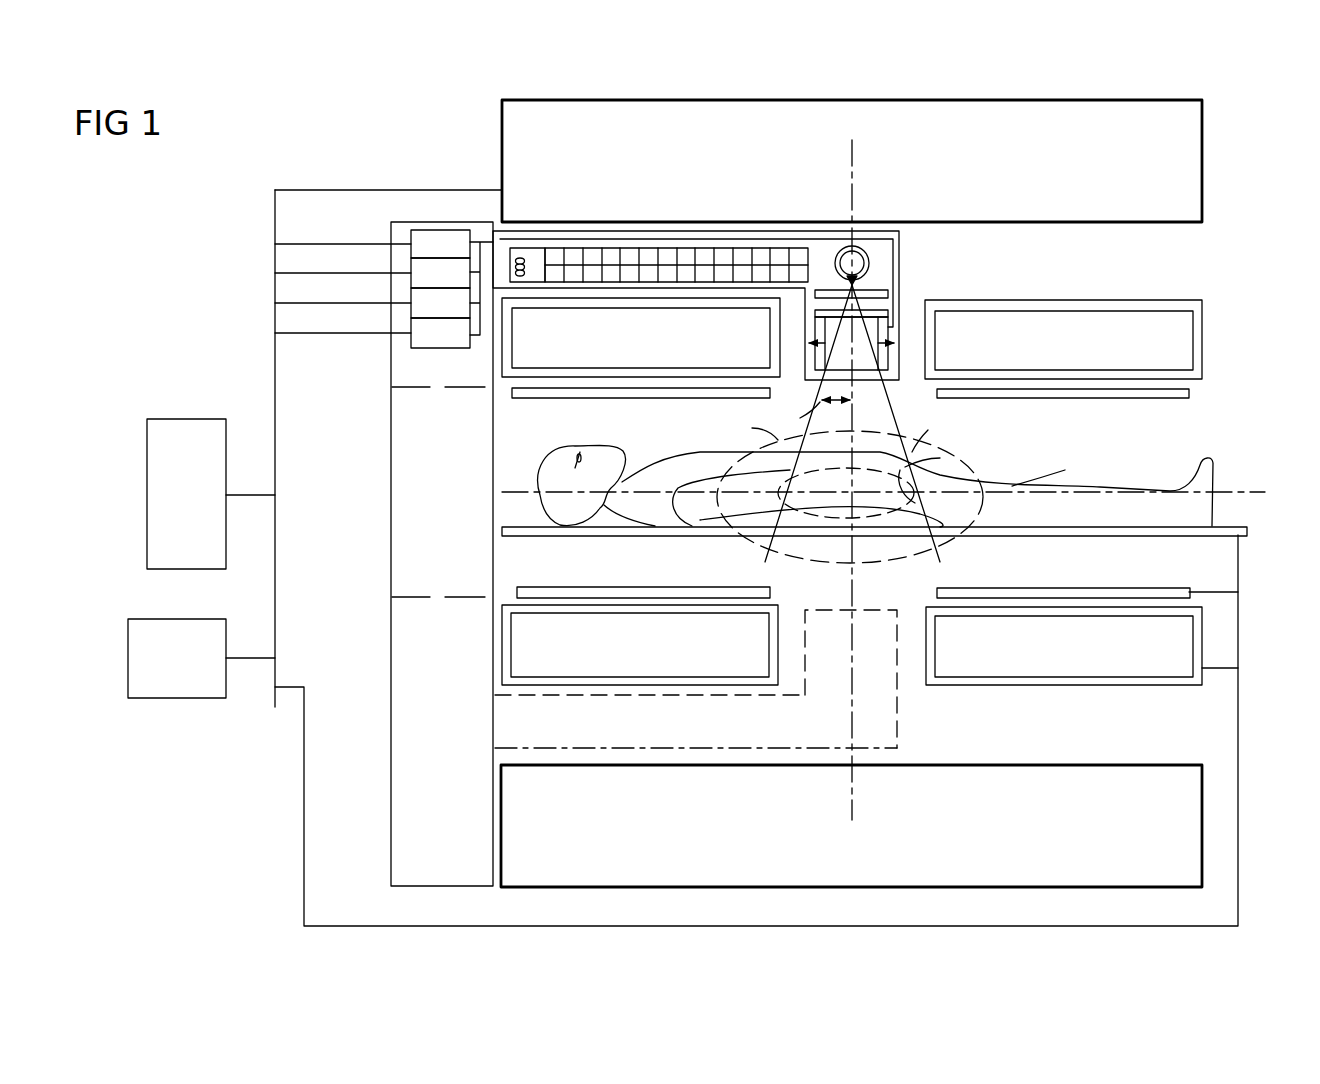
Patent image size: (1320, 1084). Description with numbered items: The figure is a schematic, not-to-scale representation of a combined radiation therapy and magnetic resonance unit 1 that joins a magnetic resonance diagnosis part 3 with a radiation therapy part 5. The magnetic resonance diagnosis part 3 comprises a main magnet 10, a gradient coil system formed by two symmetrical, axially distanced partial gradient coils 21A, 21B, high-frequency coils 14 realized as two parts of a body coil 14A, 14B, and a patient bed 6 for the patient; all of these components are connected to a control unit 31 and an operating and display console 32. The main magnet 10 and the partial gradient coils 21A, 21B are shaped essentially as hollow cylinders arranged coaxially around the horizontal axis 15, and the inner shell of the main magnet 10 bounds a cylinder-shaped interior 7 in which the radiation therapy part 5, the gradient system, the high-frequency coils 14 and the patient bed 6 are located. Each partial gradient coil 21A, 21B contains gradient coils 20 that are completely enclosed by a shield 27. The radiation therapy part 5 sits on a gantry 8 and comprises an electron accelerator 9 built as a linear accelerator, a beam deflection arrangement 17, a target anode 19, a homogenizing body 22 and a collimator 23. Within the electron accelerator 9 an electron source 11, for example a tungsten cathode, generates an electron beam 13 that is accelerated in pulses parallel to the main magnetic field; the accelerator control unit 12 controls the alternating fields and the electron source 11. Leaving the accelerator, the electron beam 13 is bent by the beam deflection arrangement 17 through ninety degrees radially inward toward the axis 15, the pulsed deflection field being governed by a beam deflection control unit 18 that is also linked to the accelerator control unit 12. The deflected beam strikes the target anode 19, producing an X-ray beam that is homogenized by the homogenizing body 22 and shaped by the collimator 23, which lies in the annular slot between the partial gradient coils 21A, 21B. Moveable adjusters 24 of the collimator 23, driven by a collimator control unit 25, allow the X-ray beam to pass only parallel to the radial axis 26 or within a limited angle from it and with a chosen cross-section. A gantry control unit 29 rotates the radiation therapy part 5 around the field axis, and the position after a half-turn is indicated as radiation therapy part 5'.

The combined radiation therapy and magnetic resonance unit 1 is at (193, 145).
The magnetic resonance diagnosis part 3 is at (903, 493).
The radiation therapy part 5 is at (738, 280).
The radiation therapy part after rotation 5' is at (726, 679).
The patient bed 6 is at (1172, 536).
The cylinder-shaped interior 7 is at (1212, 417).
The gantry 8 is at (391, 708).
The electron accelerator 9 is at (854, 232).
The main magnet 10 is at (1204, 131).
The electron source 11 is at (524, 252).
The accelerator control unit 12 is at (415, 262).
The electron beam 13 is at (612, 254).
The high-frequency coils 14 is at (851, 493).
The body coil part 14A is at (700, 399).
The body coil part 14B is at (1110, 399).
The horizontal axis 15 is at (1240, 492).
The beam deflection arrangement 17 is at (858, 262).
The beam deflection control unit 18 is at (415, 285).
The target anode 19 is at (879, 290).
The gradient coils 20 is at (853, 497).
The partial gradient coil 21A is at (784, 350).
The partial gradient coil 21B is at (1028, 297).
The homogenizing body 22 is at (893, 312).
The collimator 23 is at (889, 355).
The moveable adjusters 24 is at (813, 339).
The collimator control unit 25 is at (418, 312).
The radial axis 26 is at (858, 160).
The shield 27 is at (858, 497).
The gantry control unit 29 is at (420, 342).
The control unit 31 is at (183, 419).
The operating and display console 32 is at (163, 698).